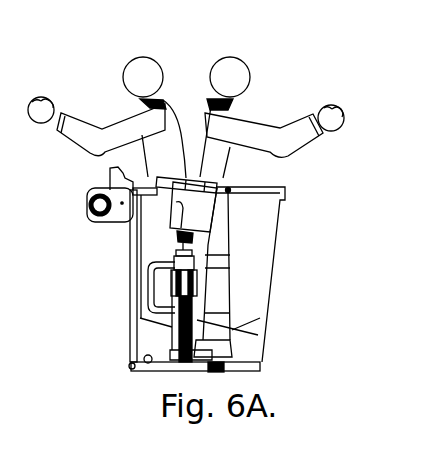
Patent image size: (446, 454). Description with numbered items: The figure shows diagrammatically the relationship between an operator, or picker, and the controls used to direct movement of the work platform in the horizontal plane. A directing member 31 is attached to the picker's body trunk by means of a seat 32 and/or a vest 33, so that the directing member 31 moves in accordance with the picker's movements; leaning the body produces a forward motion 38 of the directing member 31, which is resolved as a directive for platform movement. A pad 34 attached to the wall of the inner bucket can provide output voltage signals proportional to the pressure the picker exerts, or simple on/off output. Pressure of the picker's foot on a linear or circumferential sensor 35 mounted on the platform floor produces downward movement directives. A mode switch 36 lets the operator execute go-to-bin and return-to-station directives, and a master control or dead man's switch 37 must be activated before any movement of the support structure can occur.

The directing member 31 is at (192, 248).
The seat 32 is at (185, 230).
The vest 33 is at (186, 178).
The pad 34 is at (225, 288).
The linear or circumferential sensor 35 is at (146, 357).
The mode switch 36 is at (108, 172).
The master control switch 37 is at (224, 360).
The forward motion 38 is at (137, 57).